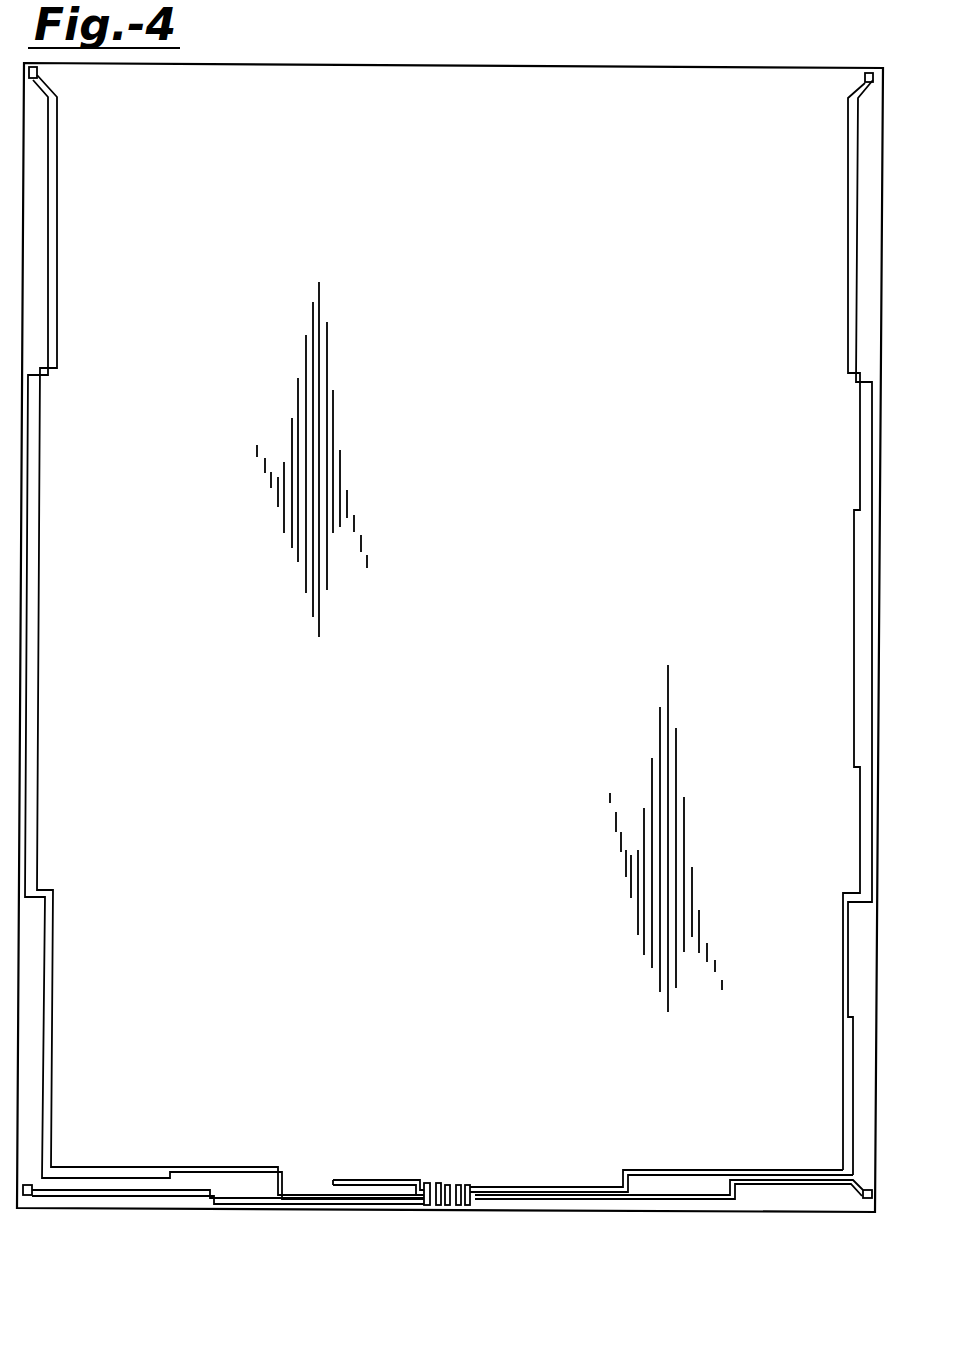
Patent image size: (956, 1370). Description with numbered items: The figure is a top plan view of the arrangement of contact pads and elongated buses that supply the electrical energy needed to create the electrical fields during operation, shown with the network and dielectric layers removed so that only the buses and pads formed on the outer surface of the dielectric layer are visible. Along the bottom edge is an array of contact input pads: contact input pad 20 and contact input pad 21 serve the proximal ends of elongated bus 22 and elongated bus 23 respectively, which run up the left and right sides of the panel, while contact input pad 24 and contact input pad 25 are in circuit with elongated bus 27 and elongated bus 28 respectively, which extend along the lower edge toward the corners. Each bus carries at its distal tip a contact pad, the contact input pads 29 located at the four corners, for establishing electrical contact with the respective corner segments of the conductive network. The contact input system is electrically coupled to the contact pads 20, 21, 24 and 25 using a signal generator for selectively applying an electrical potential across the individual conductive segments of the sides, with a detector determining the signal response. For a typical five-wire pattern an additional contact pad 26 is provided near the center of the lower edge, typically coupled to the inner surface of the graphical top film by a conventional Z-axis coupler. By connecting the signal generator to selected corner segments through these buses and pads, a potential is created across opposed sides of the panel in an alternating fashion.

The contact input pad 20 is at (440, 1193).
The contact input pad 21 is at (462, 1192).
The elongated bus 22 is at (40, 612).
The elongated bus 23 is at (854, 632).
The contact input pad 24 is at (428, 1193).
The contact input pad 25 is at (470, 1192).
The additional contact pad 26 is at (372, 1180).
The elongated bus 27 is at (247, 1203).
The elongated bus 28 is at (685, 1195).
The contact input pads 29 is at (40, 76).